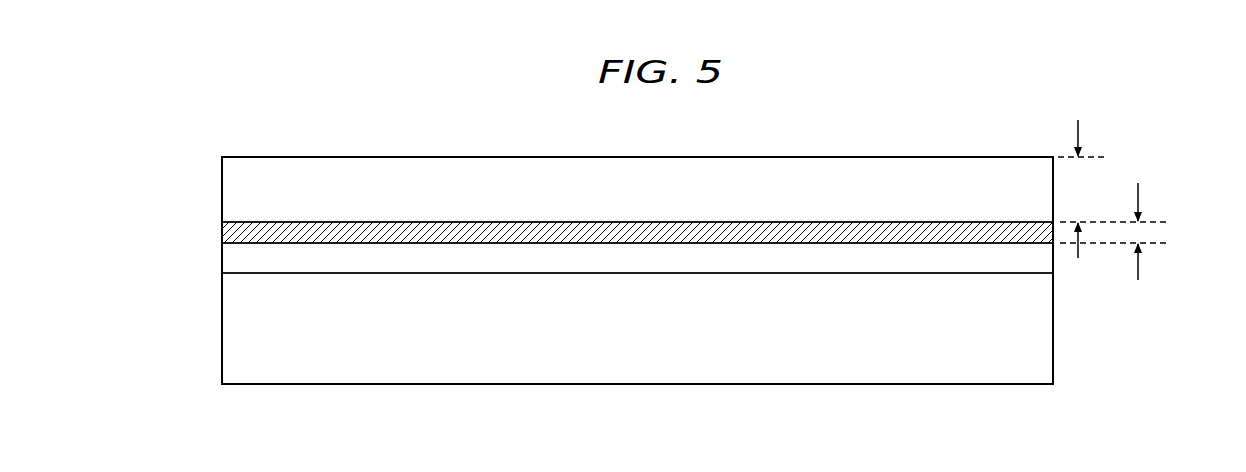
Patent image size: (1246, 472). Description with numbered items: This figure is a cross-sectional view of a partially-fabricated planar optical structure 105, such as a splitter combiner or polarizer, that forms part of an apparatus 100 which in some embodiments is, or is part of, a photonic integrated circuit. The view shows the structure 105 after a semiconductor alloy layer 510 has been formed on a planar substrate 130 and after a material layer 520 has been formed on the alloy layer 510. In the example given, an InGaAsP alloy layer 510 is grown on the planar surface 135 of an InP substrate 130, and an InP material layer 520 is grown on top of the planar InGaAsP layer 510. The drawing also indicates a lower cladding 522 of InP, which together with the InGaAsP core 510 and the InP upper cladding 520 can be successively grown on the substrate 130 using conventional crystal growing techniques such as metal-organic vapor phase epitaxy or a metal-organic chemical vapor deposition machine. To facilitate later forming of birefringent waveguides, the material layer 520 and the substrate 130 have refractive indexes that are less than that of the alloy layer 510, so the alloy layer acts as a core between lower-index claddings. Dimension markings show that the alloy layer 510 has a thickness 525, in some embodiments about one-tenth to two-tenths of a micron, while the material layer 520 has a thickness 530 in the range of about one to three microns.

The apparatus 100 is at (166, 103).
The planar optical structure 105 is at (900, 123).
The planar substrate 130 is at (262, 376).
The planar surface 135 is at (337, 234).
The semiconductor alloy layer 510 is at (222, 230).
The material layer 520 is at (222, 190).
The lower cladding 522 is at (222, 266).
The thickness of alloy layer 525 is at (1141, 198).
The thickness of material layer 530 is at (1082, 132).